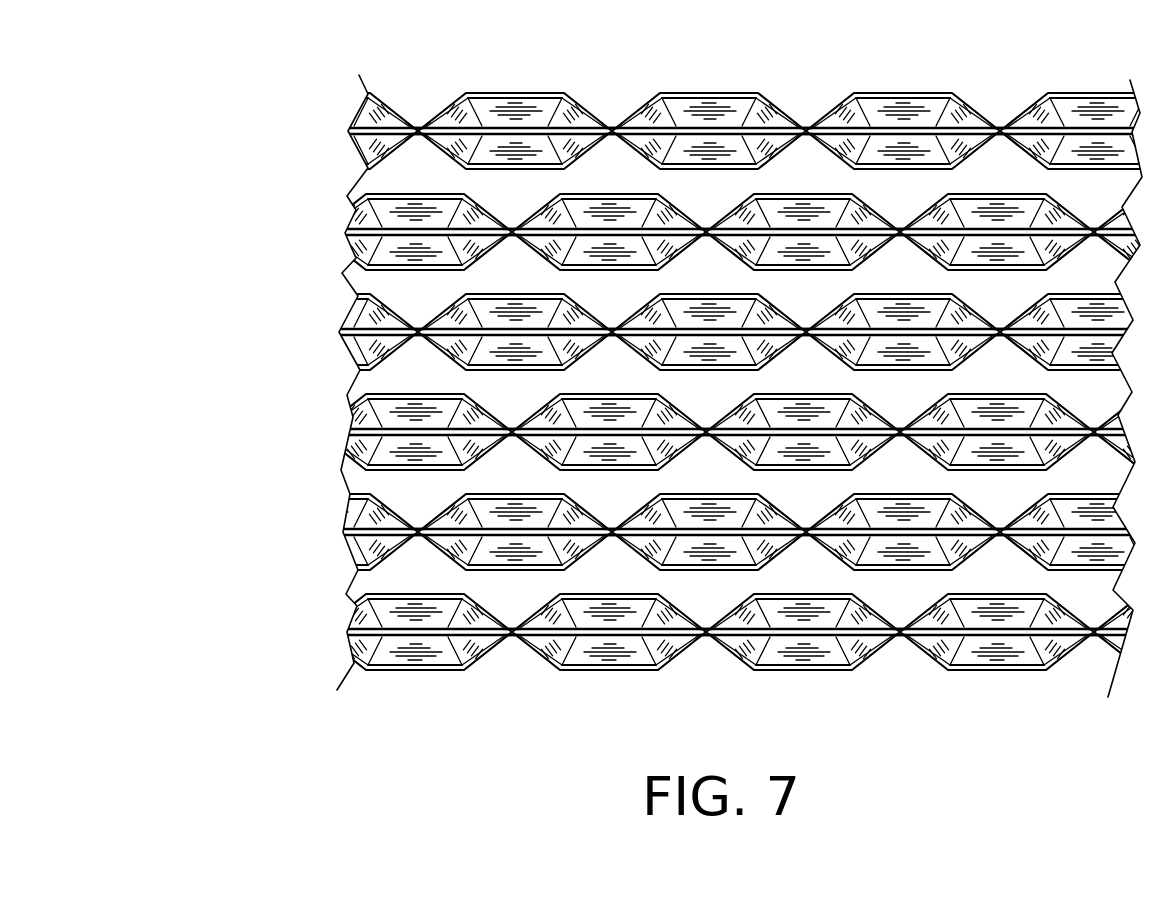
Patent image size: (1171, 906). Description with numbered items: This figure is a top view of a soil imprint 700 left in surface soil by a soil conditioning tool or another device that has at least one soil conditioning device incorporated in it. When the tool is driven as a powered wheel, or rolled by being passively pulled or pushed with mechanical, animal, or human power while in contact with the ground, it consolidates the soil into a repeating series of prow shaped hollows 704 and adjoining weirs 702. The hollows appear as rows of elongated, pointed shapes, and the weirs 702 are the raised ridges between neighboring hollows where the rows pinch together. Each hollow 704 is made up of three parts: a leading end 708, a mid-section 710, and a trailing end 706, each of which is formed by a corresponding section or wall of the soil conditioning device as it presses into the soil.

The soil imprint 700 is at (218, 245).
The weir 702 is at (418, 130).
The prow shaped hollow 704 is at (983, 676).
The trailing end 706 is at (769, 132).
The leading end 708 is at (647, 133).
The mid-section 710 is at (919, 103).